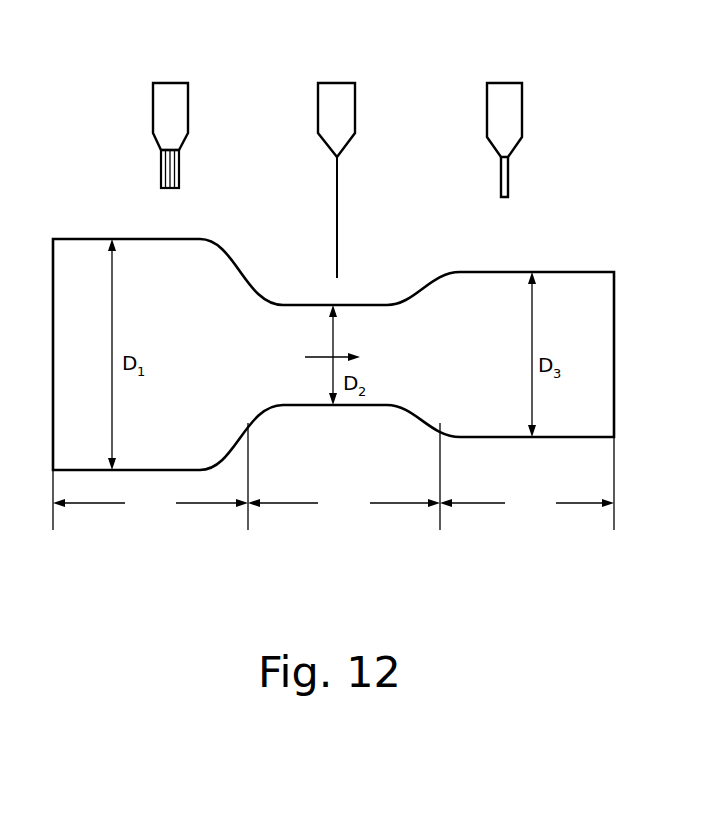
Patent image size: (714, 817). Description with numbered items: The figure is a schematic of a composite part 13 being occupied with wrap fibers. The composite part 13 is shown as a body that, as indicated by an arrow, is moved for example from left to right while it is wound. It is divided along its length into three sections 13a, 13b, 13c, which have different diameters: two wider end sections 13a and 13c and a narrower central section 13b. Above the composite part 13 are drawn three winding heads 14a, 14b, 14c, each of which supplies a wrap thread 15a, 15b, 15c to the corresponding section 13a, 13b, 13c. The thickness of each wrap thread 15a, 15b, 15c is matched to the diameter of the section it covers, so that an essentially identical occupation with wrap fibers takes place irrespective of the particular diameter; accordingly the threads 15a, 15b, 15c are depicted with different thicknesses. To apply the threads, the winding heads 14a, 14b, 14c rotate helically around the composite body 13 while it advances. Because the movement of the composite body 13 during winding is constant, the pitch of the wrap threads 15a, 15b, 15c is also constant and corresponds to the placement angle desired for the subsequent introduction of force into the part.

The composite part 13 is at (293, 522).
The section of the composite part 13a is at (150, 476).
The section of the composite part 13b is at (344, 476).
The section of the composite part 13c is at (527, 483).
The winding head 14a is at (180, 100).
The winding head 14b is at (348, 103).
The winding head 14c is at (515, 107).
The wrap thread 15a is at (178, 170).
The wrap thread 15b is at (338, 206).
The wrap thread 15c is at (510, 172).